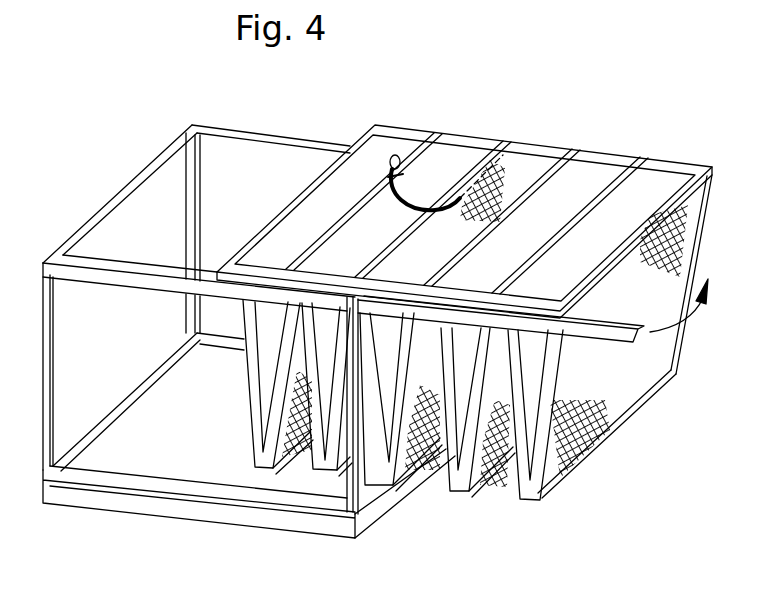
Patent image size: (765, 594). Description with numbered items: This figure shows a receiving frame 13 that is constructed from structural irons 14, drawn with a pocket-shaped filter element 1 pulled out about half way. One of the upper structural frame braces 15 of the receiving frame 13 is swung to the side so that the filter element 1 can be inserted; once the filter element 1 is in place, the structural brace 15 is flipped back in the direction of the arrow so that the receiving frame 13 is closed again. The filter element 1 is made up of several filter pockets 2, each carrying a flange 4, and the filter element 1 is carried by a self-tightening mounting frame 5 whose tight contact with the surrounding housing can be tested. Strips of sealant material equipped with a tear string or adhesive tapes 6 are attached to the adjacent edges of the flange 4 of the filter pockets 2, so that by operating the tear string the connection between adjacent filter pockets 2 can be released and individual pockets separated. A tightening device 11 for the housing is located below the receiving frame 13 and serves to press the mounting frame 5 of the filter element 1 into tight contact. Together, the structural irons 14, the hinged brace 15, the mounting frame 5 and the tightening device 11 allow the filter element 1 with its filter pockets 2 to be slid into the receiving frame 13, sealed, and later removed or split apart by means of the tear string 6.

The filter element 1 is at (634, 146).
The filter pockets 2 is at (532, 495).
The flange 4 is at (562, 163).
The self-tightening mounting frame 5 is at (535, 148).
The tear string or adhesive tapes 6 is at (415, 195).
The tightening device 11 is at (188, 517).
The receiving frame 13 is at (63, 268).
The structural irons 14 is at (43, 345).
The upper structural frame brace 15 is at (628, 342).